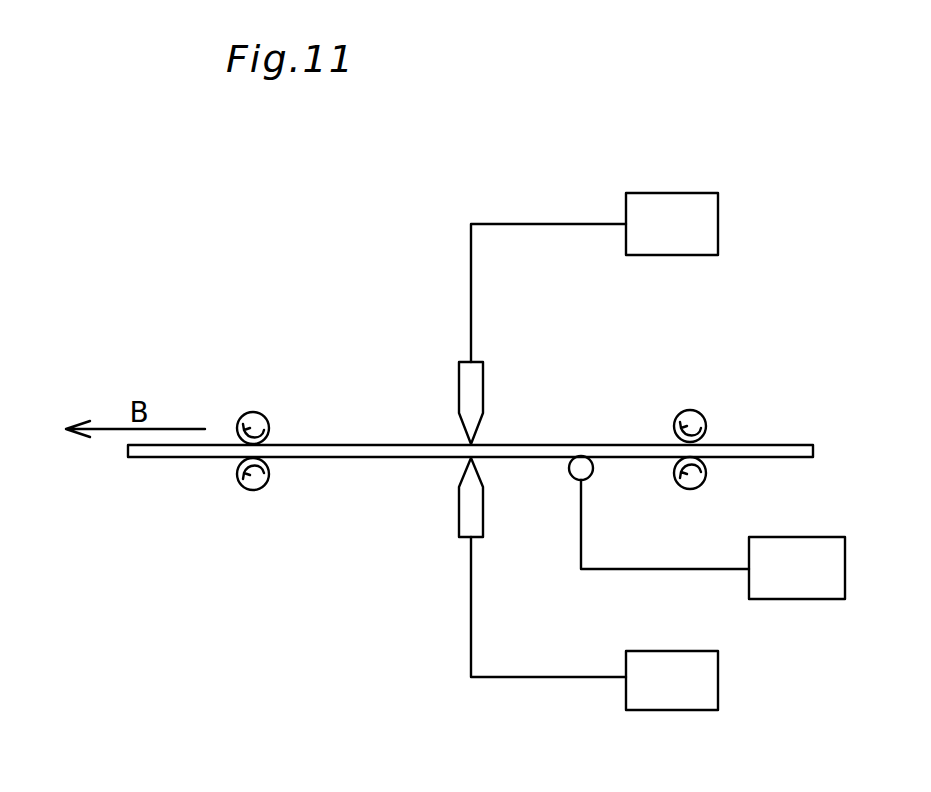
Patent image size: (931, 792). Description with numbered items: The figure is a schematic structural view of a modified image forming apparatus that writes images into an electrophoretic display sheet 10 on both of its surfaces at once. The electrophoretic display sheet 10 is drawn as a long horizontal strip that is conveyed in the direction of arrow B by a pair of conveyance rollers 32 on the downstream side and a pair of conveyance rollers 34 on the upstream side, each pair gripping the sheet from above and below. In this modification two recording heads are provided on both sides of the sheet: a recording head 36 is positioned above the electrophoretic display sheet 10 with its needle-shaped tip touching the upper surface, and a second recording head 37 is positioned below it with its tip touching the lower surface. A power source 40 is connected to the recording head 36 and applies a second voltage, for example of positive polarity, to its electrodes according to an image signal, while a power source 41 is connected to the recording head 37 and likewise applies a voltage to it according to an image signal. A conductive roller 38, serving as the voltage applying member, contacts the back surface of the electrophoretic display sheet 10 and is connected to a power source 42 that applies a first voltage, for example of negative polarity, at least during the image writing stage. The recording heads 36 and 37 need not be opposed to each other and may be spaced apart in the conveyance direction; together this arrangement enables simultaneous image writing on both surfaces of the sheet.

The electrophoretic display sheet 10 is at (362, 443).
The conveyance roller 32 is at (260, 401).
The conveyance roller 34 is at (698, 401).
The recording head 36 is at (484, 386).
The recording head 37 is at (484, 502).
The conductive roller 38 is at (593, 475).
The power source 40 is at (668, 193).
The power source 41 is at (668, 651).
The power source 42 is at (797, 537).